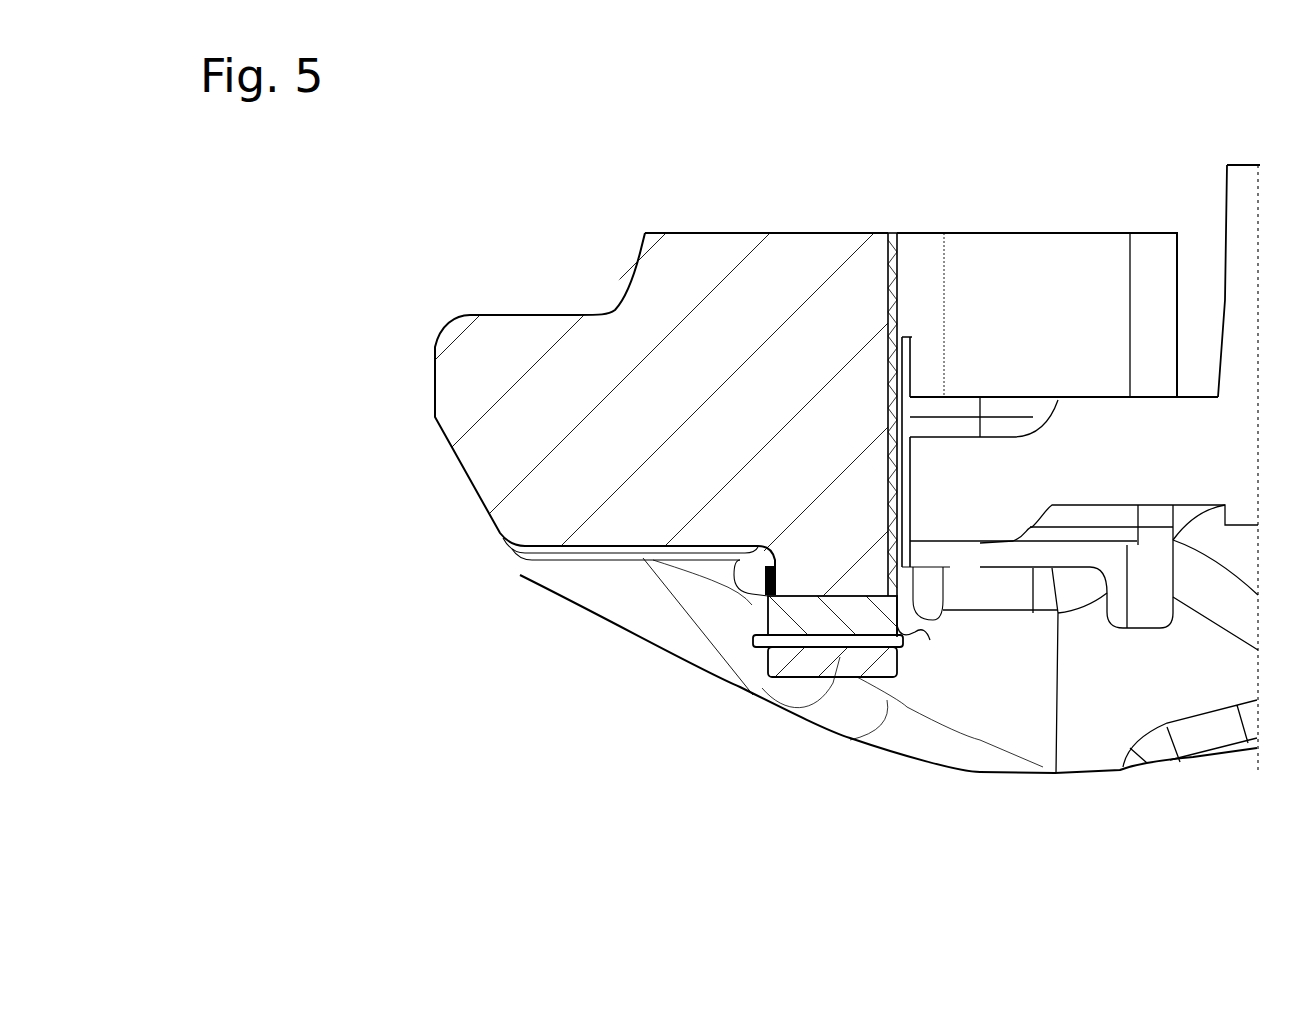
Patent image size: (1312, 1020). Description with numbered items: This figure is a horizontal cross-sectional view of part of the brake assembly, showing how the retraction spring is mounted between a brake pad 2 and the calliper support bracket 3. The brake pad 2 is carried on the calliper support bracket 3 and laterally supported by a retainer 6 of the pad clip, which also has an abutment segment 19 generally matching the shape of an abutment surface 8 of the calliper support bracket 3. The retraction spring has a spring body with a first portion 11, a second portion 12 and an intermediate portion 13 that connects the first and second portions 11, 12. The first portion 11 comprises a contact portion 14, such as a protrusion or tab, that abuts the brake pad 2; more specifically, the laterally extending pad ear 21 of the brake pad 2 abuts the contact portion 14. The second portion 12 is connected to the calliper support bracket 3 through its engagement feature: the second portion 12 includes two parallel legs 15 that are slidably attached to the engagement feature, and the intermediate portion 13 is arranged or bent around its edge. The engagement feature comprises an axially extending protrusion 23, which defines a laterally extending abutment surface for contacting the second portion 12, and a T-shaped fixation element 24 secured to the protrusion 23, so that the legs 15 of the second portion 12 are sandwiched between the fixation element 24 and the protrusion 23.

The brake pad 2 is at (1240, 203).
The calliper support bracket 3 is at (778, 247).
The retainer 6 is at (900, 258).
The abutment surface 8 is at (885, 488).
The first portion 11 is at (913, 472).
The second portion 12 is at (830, 636).
The intermediate portion 13 is at (900, 628).
The contact portion 14 is at (923, 375).
The leg 15 is at (763, 648).
The abutment segment 19 is at (892, 445).
The pad ear 21 is at (1098, 428).
The protrusion 23 is at (791, 610).
The fixation element 24 is at (843, 663).